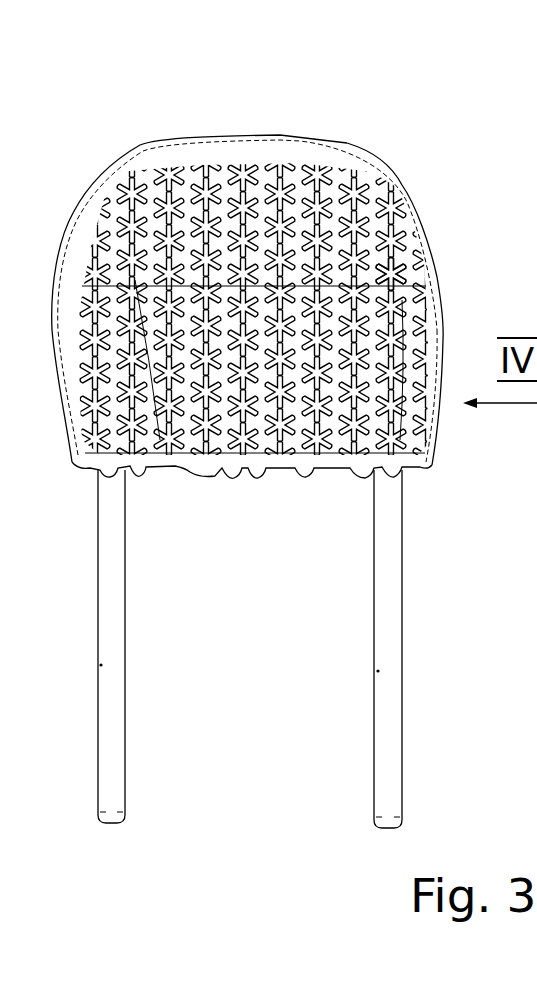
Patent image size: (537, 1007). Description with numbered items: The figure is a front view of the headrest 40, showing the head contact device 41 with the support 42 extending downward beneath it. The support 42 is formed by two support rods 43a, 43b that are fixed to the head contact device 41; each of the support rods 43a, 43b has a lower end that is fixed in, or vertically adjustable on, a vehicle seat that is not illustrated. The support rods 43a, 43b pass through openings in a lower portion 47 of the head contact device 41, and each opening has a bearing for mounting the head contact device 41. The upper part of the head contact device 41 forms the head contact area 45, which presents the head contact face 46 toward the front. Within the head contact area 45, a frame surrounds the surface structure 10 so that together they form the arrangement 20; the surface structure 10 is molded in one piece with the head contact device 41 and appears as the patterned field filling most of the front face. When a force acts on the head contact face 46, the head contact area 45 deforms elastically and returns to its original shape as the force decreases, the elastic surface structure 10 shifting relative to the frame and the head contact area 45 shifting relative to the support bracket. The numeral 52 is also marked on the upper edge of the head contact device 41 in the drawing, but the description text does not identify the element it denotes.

The headrest 40 is at (96, 146).
The head contact device 41 is at (168, 152).
The outer shell 52 is at (292, 129).
The head contact area 45 is at (360, 148).
The surface structure 10 is at (398, 216).
The arrangement 20 is at (414, 272).
The head contact face 46 is at (157, 243).
The lower portion 47 is at (73, 480).
The support 42 is at (261, 649).
The support rod 43a is at (112, 722).
The support rod 43b is at (388, 714).